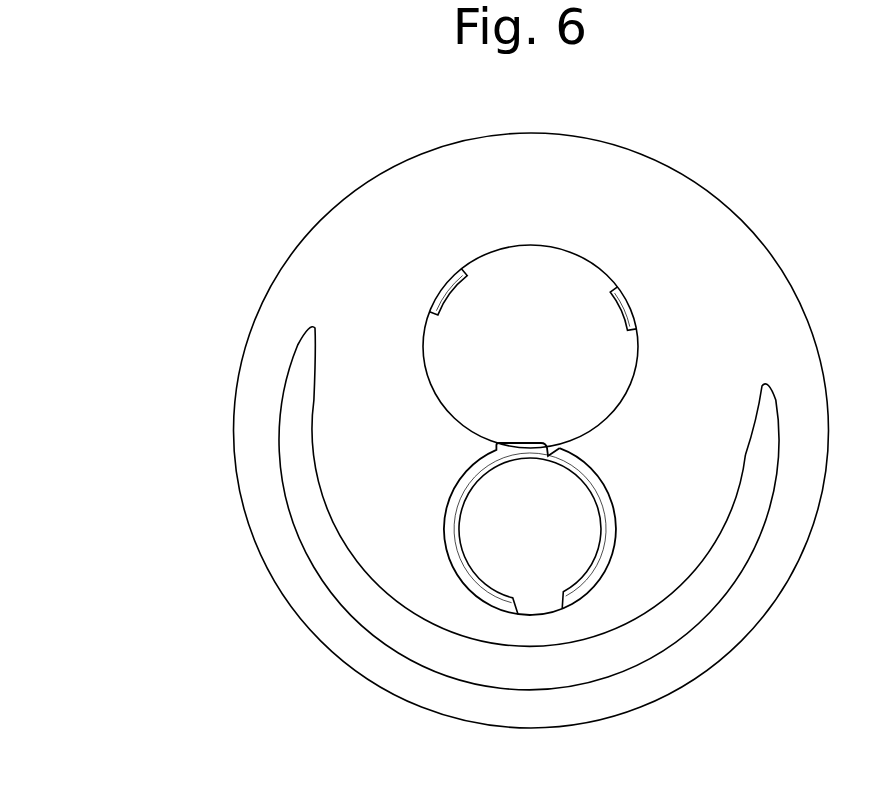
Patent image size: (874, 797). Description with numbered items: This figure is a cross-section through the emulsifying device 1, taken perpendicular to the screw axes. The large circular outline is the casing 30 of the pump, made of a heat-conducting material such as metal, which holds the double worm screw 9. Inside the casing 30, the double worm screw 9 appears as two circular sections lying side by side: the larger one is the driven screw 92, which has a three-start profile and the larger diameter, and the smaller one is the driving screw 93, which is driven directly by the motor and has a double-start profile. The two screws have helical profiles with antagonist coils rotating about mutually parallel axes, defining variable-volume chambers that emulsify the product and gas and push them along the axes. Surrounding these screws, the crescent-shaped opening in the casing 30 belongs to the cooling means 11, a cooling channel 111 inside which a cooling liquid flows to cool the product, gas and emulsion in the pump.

The device 1 is at (154, 256).
The double worm screw 9 is at (462, 226).
The cooling means 11 is at (349, 649).
The cooling channel 111 is at (322, 550).
The casing 30 is at (567, 148).
The driven screw 92 is at (583, 287).
The driving screw 93 is at (553, 543).